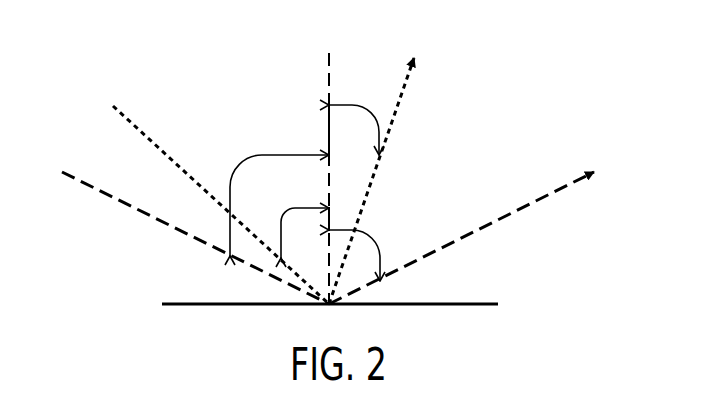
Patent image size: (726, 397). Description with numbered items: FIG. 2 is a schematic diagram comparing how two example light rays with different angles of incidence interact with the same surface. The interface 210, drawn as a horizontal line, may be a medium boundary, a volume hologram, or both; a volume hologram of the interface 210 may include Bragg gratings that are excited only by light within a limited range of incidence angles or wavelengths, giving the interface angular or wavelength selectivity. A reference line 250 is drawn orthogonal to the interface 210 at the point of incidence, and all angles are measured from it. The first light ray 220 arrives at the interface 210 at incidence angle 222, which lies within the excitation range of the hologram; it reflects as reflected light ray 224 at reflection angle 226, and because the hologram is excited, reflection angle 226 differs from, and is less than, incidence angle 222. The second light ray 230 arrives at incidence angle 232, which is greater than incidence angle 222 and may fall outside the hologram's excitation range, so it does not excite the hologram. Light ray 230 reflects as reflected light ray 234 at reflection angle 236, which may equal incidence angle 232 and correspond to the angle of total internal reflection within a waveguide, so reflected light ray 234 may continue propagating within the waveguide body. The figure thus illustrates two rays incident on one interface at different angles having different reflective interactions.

The interface 210 is at (178, 303).
The light ray 220 is at (205, 193).
The incidence angle 222 is at (292, 228).
The reflected light ray 224 is at (380, 168).
The reflection angle 226 is at (356, 117).
The light ray 230 is at (178, 228).
The incidence angle 232 is at (279, 196).
The reflected light ray 234 is at (481, 227).
The reflection angle 236 is at (369, 249).
The reference line 250 is at (329, 166).